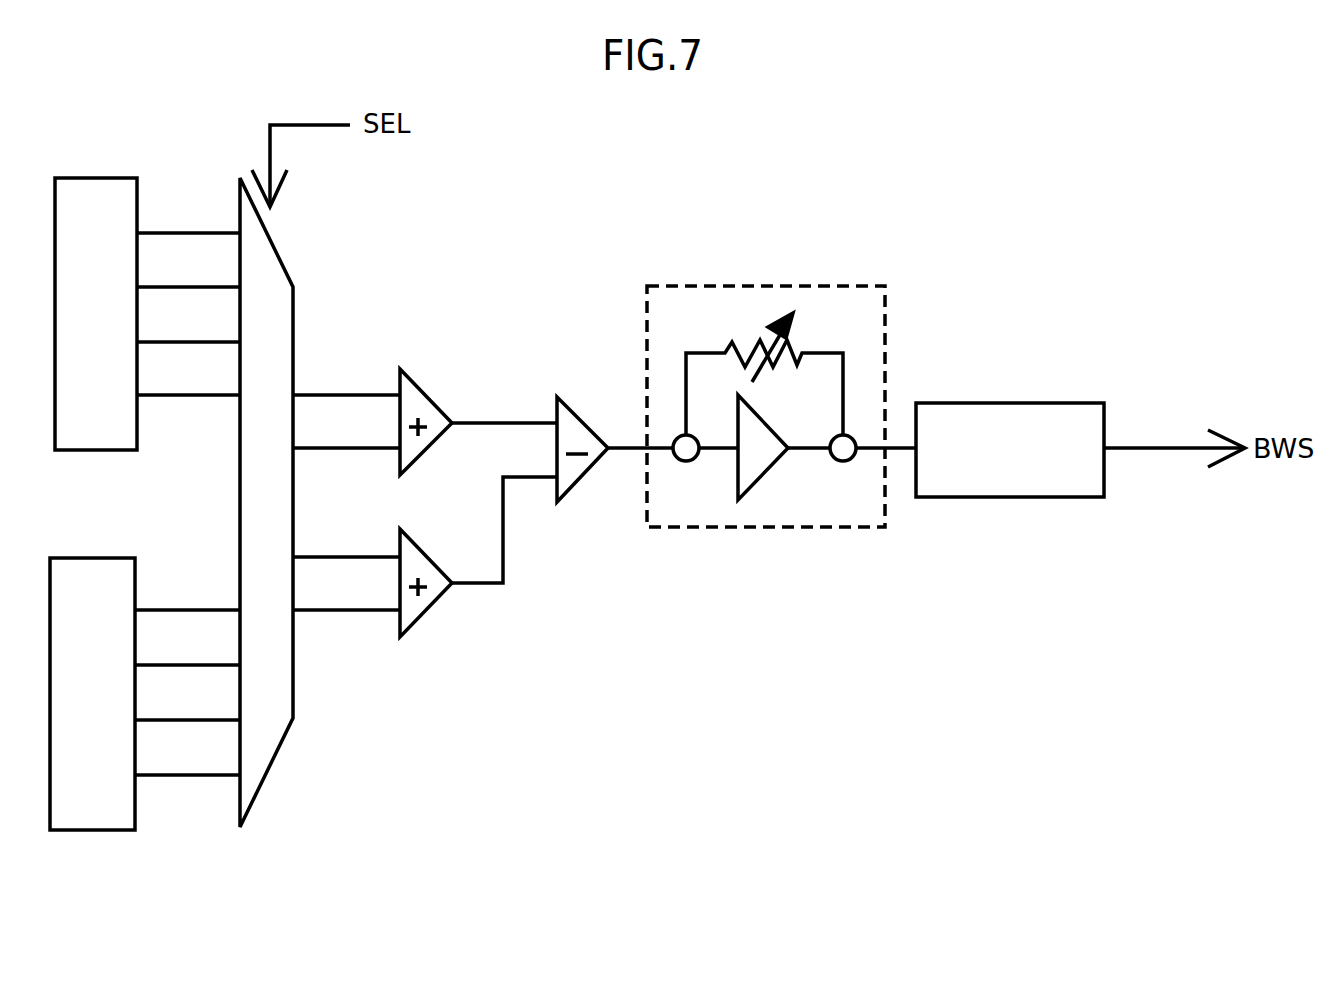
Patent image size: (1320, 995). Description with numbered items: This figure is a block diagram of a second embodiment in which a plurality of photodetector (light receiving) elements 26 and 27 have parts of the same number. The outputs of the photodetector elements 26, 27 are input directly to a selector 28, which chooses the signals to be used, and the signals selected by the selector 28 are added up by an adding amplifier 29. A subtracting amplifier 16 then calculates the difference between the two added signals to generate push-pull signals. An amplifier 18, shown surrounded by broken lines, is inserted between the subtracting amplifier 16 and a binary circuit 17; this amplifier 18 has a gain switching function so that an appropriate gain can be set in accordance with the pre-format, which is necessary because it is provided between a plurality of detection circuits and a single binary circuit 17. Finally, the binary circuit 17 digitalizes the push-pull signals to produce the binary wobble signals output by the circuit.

The subtracting amplifier 16 is at (577, 408).
The binary circuit 17 is at (998, 497).
The amplifier 18 is at (737, 527).
The photodetector element 26 is at (120, 176).
The photodetector element 27 is at (98, 557).
The selector 28 is at (273, 750).
The adding amplifier 29 is at (403, 373).